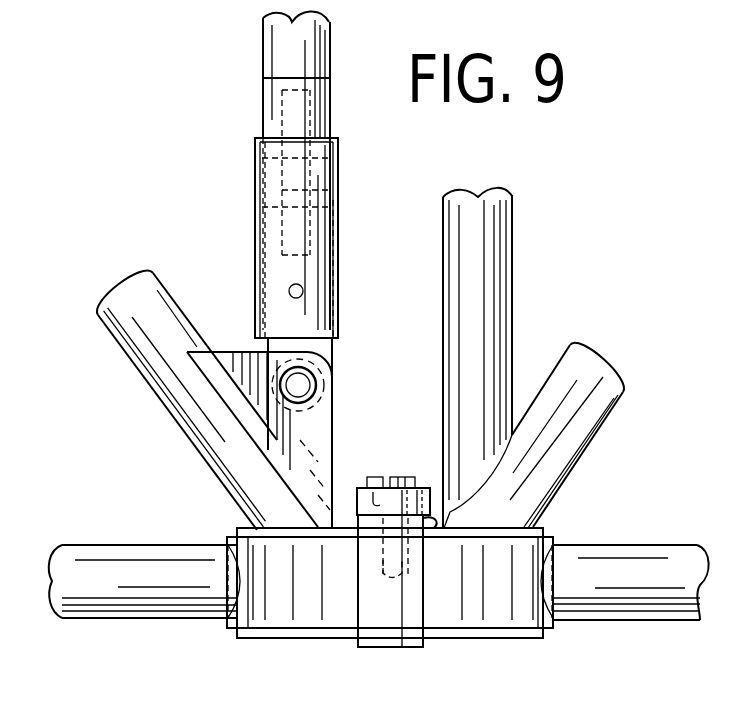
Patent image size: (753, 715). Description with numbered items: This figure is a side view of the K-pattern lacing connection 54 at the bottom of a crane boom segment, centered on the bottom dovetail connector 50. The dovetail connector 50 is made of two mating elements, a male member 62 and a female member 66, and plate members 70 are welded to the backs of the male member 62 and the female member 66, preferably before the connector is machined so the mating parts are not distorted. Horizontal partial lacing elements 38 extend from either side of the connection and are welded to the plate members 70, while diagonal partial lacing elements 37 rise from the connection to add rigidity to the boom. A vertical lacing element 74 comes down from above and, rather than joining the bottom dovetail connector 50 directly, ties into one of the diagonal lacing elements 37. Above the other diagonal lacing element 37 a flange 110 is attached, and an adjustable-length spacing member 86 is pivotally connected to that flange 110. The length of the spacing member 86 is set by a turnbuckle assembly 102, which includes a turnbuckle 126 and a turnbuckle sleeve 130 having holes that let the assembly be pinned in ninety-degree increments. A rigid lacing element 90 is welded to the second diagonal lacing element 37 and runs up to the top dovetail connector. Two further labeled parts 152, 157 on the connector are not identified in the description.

The diagonal partial lacing element 37 is at (138, 372).
The partial lacing element 38 is at (106, 621).
The dovetail connector 50 is at (488, 657).
The K-pattern connection 54 is at (306, 632).
The male member 62 is at (412, 633).
The female member 66 is at (372, 647).
The plate member 70 is at (270, 614).
The vertical lacing element 74 is at (327, 67).
The adjustable-length spacing member 86 is at (263, 61).
The rigid lacing element 90 is at (512, 343).
The turnbuckle assembly 102 is at (342, 178).
The flange 110 is at (322, 443).
The turnbuckle 126 is at (293, 174).
The turnbuckle sleeve 130 is at (340, 297).
The clamp cap 152 is at (410, 478).
The hook ear 157 is at (433, 526).